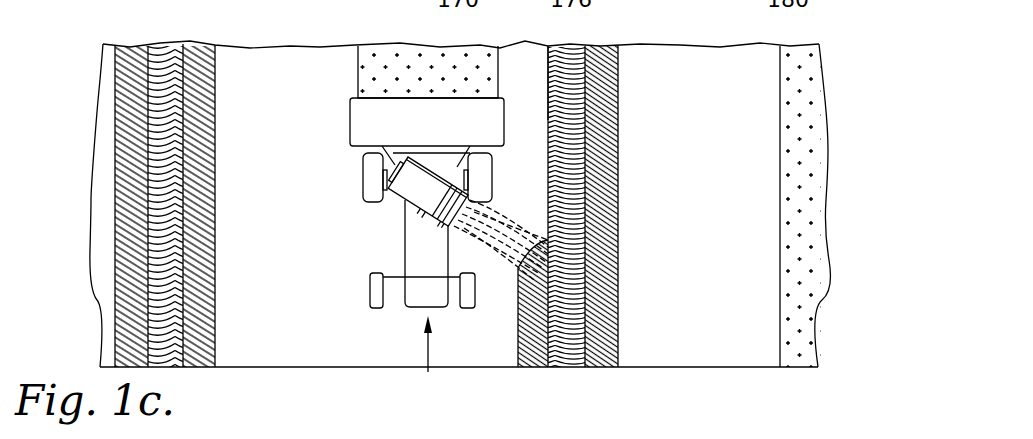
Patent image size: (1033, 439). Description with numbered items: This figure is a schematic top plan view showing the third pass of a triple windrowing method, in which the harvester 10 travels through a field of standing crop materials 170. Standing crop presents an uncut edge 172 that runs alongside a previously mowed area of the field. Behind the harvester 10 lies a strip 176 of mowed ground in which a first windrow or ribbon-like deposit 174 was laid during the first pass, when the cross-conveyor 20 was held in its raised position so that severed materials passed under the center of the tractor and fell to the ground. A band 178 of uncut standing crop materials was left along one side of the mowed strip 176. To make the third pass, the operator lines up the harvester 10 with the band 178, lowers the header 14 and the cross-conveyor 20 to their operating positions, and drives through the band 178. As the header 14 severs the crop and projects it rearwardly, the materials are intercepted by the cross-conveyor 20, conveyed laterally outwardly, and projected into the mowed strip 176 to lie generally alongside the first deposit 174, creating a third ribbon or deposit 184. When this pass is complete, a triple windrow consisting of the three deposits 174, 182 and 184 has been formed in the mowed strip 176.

The harvester 10 is at (392, 315).
The header 14 is at (365, 133).
The cross-conveyor 20 is at (415, 195).
The field of standing crop materials 170 is at (232, 38).
The uncut edge 172 is at (356, 76).
The first windrow or deposit 174 is at (550, 148).
The mowed strip 176 is at (520, 70).
The band of uncut standing crop materials 178 is at (390, 50).
The second deposit 182 is at (600, 165).
The third ribbon, windrow or deposit 184 is at (530, 357).